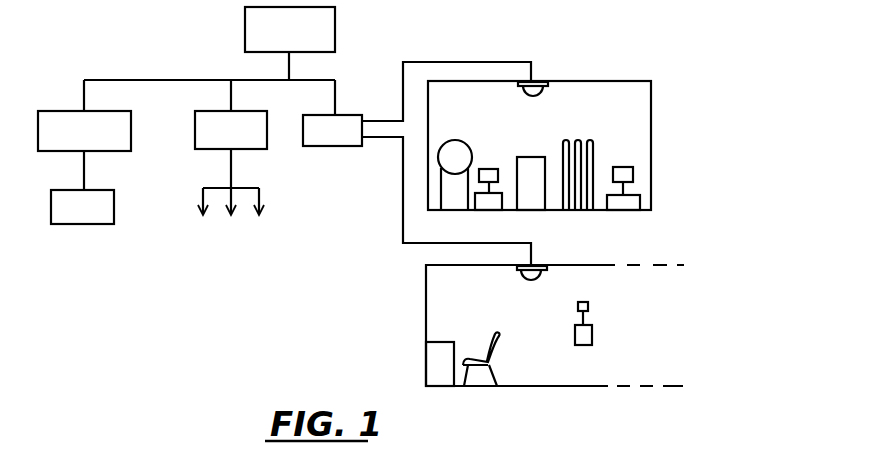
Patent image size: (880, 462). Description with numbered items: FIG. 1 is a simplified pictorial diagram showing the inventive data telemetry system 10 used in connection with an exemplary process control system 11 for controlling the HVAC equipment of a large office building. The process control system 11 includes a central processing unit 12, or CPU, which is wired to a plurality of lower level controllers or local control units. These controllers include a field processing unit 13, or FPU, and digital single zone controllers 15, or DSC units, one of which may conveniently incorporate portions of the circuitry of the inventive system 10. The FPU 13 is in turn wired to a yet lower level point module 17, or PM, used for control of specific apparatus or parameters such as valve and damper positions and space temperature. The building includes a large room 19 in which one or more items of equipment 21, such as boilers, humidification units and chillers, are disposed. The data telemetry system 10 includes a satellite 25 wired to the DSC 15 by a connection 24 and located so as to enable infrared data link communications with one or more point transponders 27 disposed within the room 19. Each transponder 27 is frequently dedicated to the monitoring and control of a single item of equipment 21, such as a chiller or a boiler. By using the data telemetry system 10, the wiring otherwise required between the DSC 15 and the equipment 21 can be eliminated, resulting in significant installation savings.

The data telemetry system 10 is at (630, 172).
The process control system 11 is at (307, 240).
The central processing unit 12 is at (335, 20).
The field processing unit 13 is at (131, 123).
The digital single zone controller 15 is at (259, 149).
The point module 17 is at (114, 197).
The room 19 is at (548, 89).
The equipment 21 is at (518, 152).
The cable/bus 24 is at (517, 48).
The satellite 25 is at (540, 78).
The point transponder 27 is at (627, 167).